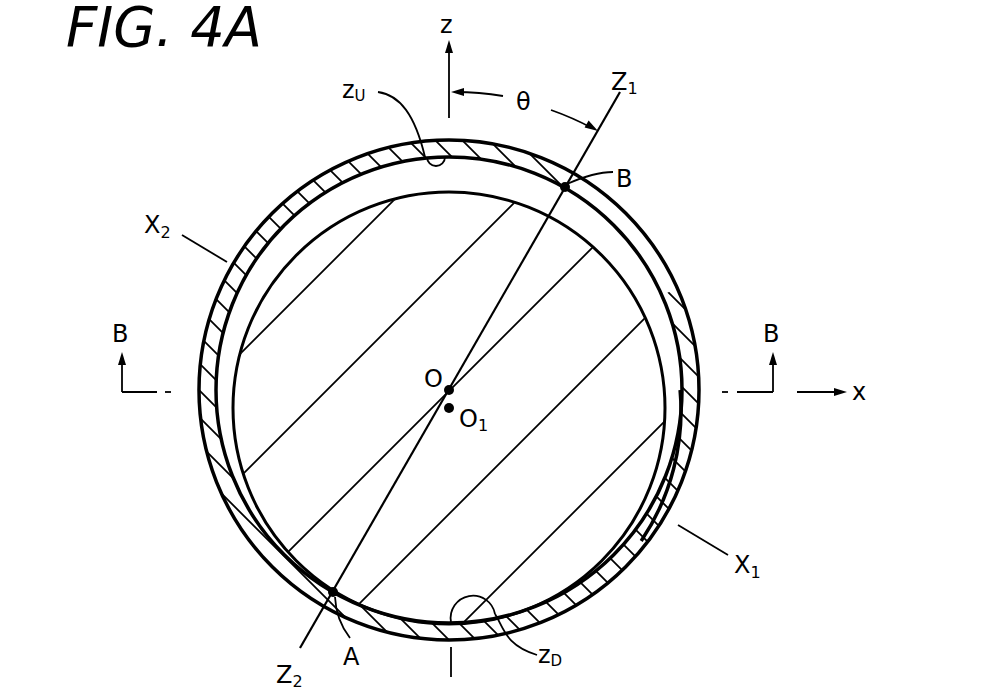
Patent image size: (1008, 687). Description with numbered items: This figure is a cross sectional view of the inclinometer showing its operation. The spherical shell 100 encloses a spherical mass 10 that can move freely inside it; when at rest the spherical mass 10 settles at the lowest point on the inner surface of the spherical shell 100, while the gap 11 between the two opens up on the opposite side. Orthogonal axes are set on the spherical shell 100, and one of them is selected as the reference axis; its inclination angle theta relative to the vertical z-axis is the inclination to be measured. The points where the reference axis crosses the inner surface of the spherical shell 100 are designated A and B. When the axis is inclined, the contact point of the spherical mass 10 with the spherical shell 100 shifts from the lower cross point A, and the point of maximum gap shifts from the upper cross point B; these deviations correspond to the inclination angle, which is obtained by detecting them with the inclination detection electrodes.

The spherical shell 100 is at (298, 188).
The spherical mass 10 is at (607, 313).
The clearance gap between inner body and tubular member 11 is at (668, 433).